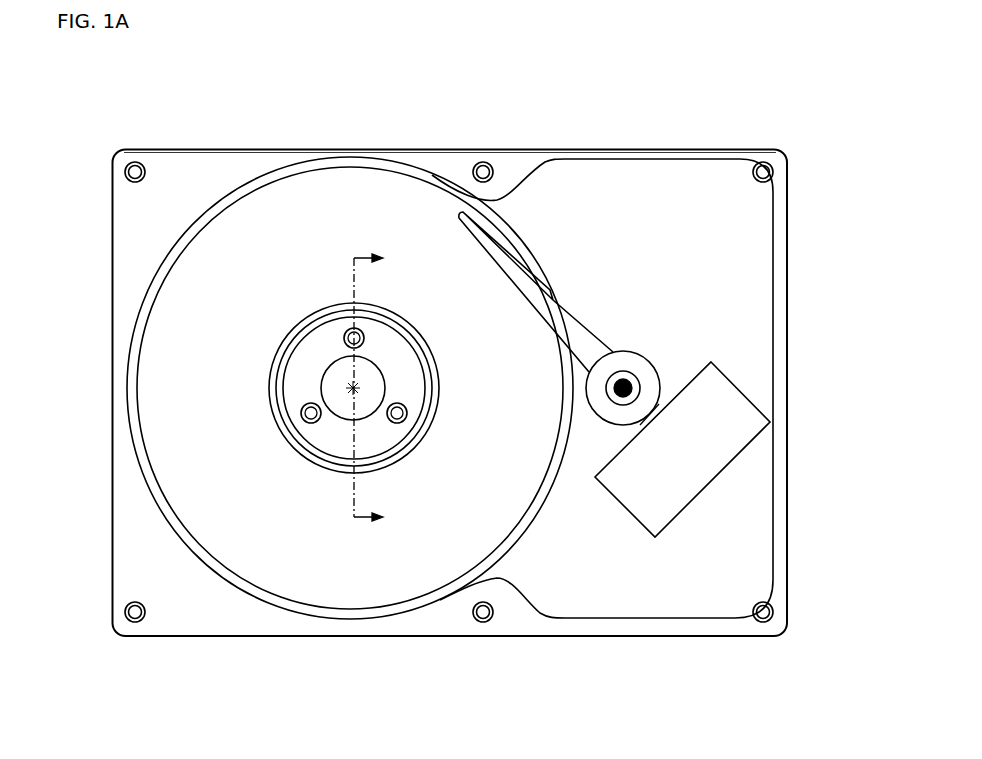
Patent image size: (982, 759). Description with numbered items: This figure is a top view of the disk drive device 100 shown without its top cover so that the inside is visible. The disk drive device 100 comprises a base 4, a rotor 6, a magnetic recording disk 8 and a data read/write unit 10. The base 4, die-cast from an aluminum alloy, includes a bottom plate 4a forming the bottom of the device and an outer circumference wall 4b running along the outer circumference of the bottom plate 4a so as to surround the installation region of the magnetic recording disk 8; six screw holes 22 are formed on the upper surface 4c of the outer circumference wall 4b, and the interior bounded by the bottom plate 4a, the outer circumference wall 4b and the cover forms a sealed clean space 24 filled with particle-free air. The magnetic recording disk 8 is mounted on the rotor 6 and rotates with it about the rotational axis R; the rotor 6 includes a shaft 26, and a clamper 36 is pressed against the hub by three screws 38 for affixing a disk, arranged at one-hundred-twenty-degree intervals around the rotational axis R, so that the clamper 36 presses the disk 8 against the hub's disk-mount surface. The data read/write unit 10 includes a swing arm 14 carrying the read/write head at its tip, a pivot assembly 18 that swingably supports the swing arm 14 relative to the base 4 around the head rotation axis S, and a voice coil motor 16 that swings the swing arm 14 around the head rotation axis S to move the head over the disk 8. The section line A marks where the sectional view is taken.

The disk drive device 100 is at (456, 729).
The base 4 is at (789, 289).
The bottom plate 4a is at (578, 192).
The outer circumference wall 4b is at (208, 173).
The upper surface of the outer circumference wall 4c is at (124, 220).
The rotor 6 is at (345, 418).
The magnetic recording disk 8 is at (355, 208).
The data read/write unit 10 is at (838, 324).
The swing arm 14 is at (588, 336).
The voice coil motor 16 is at (733, 415).
The pivot assembly 18 is at (649, 371).
The screw holes 22 is at (135, 162).
The clean space 24 is at (654, 193).
The shaft 26 is at (366, 403).
The clamper 36 is at (308, 390).
The screws for affixing a disk 38 is at (350, 334).
The rotational axis R is at (352, 390).
The head rotation axis S is at (627, 393).
The section line A- A is at (378, 388).